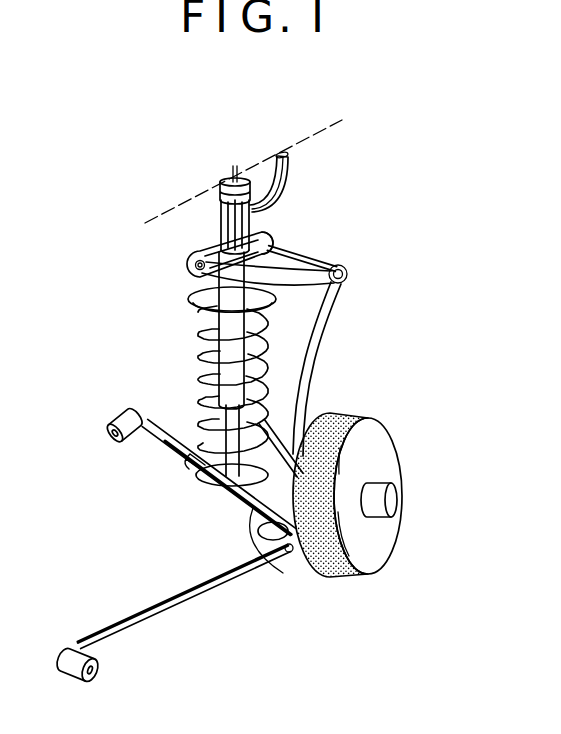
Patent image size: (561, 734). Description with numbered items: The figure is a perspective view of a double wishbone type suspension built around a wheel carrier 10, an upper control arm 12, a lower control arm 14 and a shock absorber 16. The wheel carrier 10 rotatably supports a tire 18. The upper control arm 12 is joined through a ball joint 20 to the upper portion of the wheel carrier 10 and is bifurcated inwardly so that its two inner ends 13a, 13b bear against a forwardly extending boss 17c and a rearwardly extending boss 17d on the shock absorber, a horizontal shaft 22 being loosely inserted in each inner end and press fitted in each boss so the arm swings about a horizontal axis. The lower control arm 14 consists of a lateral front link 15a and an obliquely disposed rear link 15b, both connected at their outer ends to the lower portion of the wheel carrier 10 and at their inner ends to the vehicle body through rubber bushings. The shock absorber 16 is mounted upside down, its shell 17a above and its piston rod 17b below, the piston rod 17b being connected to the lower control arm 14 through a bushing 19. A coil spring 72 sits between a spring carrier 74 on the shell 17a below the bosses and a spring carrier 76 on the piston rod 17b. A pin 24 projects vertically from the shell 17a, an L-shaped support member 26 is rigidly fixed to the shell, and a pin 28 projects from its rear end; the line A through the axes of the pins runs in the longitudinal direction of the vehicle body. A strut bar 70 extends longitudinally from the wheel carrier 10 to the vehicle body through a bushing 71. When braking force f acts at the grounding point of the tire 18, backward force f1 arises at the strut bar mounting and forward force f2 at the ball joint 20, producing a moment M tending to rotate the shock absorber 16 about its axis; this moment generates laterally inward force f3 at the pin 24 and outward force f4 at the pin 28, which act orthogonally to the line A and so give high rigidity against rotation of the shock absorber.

The wheel carrier 10 is at (318, 320).
The upper control arm 12 is at (261, 258).
The inner end of upper control arm 13a is at (202, 283).
The inner end of upper control arm 13b is at (311, 253).
The lower control arm 14 is at (238, 503).
The front link 15a is at (147, 447).
The rear link 15b is at (277, 437).
The shock absorber 16 is at (226, 333).
The shell 17a is at (225, 384).
The piston rod 17b is at (180, 465).
The forwardly extending boss 17c is at (231, 238).
The rearwardly extending boss 17d is at (253, 228).
The tire 18 is at (357, 413).
The bushing 19 is at (218, 491).
The ball joint 20 is at (348, 271).
The horizontal shaft 22 is at (194, 266).
The pin 24 is at (236, 167).
The L-shaped support member 26 is at (287, 176).
The pin 28 is at (282, 152).
The strut bar 70 is at (185, 596).
The bushing 71 is at (99, 672).
The coil spring 72 is at (206, 326).
The spring carrier 74 is at (202, 309).
The spring carrier 76 is at (257, 562).
The line A is at (322, 131).
The moment M is at (196, 217).
The braking force f is at (420, 531).
The backward force f1 is at (119, 603).
The forward force f2 is at (298, 311).
The laterally inward force f3 is at (197, 151).
The laterally outward force f4 is at (319, 168).